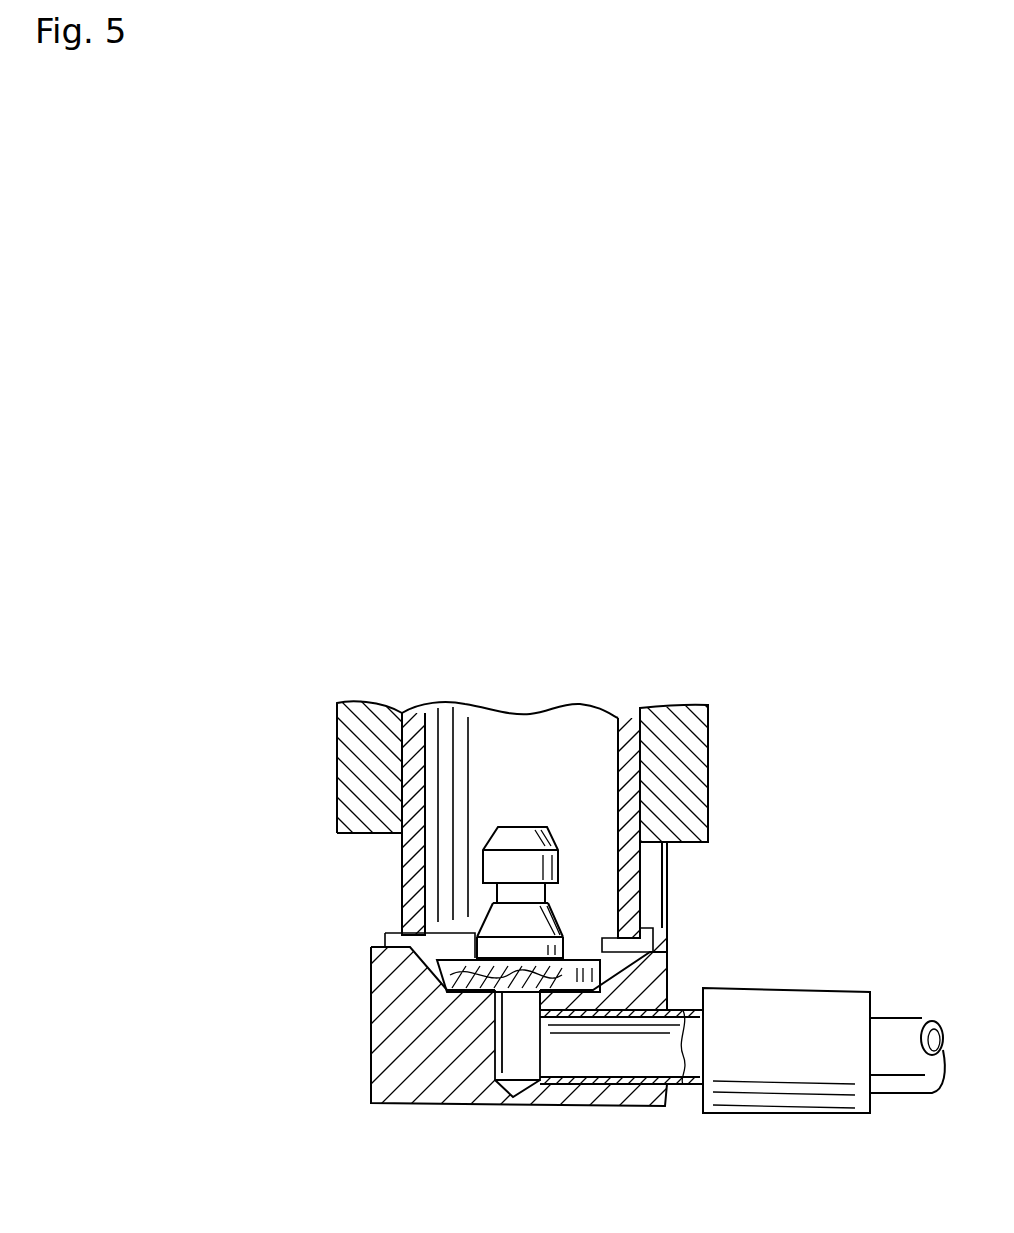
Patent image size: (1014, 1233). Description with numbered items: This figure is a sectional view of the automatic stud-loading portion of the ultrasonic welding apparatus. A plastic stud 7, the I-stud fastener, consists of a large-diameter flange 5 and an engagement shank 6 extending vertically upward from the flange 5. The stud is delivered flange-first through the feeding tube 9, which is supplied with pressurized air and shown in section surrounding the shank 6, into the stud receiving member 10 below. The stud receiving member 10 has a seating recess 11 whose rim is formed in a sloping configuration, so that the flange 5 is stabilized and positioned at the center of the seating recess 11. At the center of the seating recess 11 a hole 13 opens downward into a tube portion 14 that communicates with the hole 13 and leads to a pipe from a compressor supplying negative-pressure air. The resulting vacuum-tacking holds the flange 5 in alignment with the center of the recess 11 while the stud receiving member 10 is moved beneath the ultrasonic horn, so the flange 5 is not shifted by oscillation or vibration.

The flange 5 is at (456, 947).
The engagement shank 6 is at (507, 867).
The plastic stud 7 is at (404, 892).
The feeding tube 9 is at (365, 748).
The stud receiving member 10 is at (440, 1107).
The seating recess 11 is at (612, 970).
The hole 13 is at (513, 1021).
The tube portion 14 is at (592, 1083).